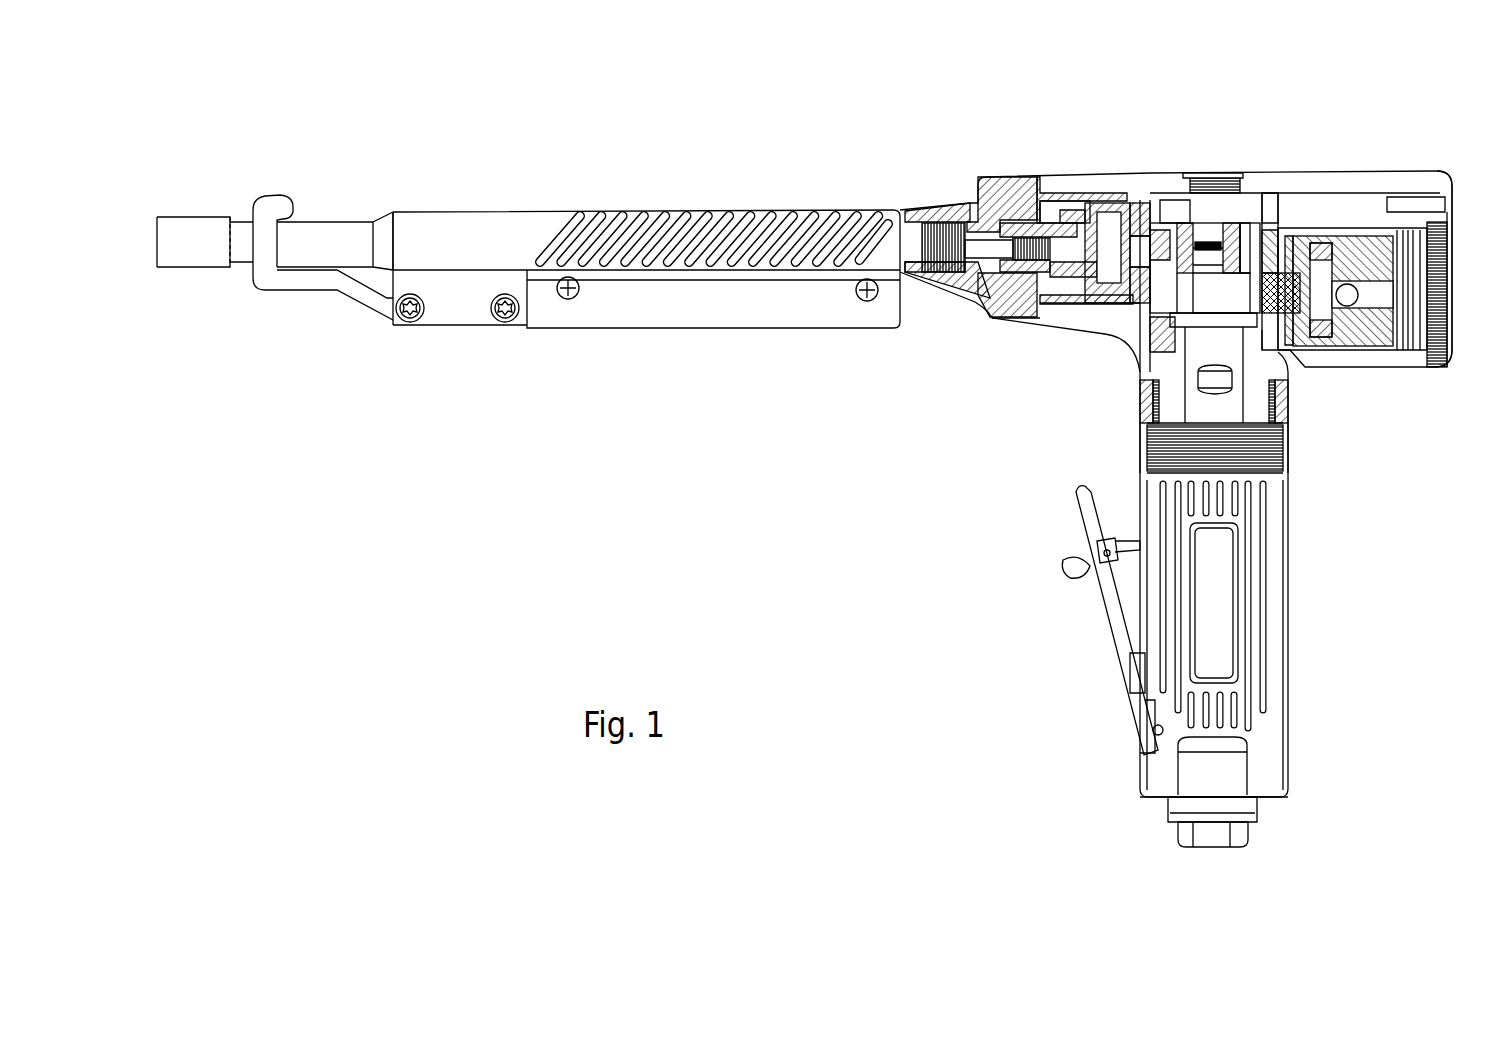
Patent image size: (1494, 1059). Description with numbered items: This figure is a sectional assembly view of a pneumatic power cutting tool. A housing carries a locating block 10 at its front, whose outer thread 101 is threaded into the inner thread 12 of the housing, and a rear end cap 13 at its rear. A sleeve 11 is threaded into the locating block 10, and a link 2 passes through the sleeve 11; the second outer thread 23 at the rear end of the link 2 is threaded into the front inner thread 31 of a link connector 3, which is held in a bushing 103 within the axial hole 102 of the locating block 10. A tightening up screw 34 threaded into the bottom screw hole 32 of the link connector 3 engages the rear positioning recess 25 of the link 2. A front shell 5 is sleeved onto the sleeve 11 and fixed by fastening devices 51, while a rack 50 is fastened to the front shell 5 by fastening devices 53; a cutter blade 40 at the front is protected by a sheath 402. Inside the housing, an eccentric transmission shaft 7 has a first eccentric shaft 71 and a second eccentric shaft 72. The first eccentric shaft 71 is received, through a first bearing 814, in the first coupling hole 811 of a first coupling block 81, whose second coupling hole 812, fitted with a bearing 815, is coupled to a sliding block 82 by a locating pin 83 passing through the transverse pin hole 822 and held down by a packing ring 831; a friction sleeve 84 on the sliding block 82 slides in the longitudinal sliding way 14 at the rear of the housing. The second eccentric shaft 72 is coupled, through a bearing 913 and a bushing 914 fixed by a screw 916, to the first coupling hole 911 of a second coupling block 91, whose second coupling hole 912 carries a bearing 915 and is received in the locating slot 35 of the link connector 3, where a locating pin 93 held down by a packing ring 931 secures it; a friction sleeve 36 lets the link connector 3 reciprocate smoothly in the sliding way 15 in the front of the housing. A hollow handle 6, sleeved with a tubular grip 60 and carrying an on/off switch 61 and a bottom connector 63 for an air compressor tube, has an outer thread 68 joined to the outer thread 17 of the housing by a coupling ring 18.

The sheath 402 is at (198, 228).
The cutter blade 40 is at (247, 222).
The front shell 5 is at (703, 198).
The rack 50 is at (316, 300).
The fastening devices 53 is at (410, 324).
The fastening devices 51 is at (568, 300).
The locating block 10 is at (918, 208).
The sleeve 11 is at (908, 222).
The outer thread 101 is at (945, 210).
The link 2 is at (982, 205).
The inner thread 12 is at (1000, 200).
The second outer thread 23 is at (1022, 210).
The rear positioning recess 25 is at (1060, 220).
The friction sleeve 36 is at (1082, 210).
The sliding way 15 is at (1097, 210).
The second coupling hole 912 is at (1130, 200).
The locating slot 35 is at (1150, 235).
The second eccentric shaft 72 is at (1175, 205).
The screw 916 is at (1203, 240).
The bushing 914 is at (1230, 250).
The first coupling hole 911 is at (1245, 280).
The bearing 913 is at (1270, 255).
The second coupling block 91 is at (1285, 270).
The transverse pin hole 822 is at (1312, 258).
The packing ring 831 is at (1328, 262).
The locating pin 83 is at (1365, 292).
The sliding block 82 is at (1382, 262).
The friction sleeve 84 is at (1402, 262).
The longitudinal sliding way 14 is at (1432, 252).
The rear end cap 13 is at (1455, 205).
The axial hole 102 is at (985, 270).
The bushing 103 is at (975, 302).
The front inner thread 31 is at (1005, 300).
The bottom screw hole 32 is at (1045, 285).
The tightening up screw 34 is at (1068, 282).
The link connector 3 is at (1060, 300).
The locating pin 93 is at (1115, 305).
The first coupling block 81 is at (1138, 305).
The packing ring 931 is at (1120, 305).
The bearing 915 is at (1085, 305).
The outer thread 17 is at (1143, 440).
The first coupling hole 811 is at (1178, 312).
The first bearing 814 is at (1225, 330).
The first eccentric shaft 71 is at (1258, 403).
The eccentric transmission shaft 7 is at (1282, 402).
The coupling ring 18 is at (1275, 440).
The outer thread 68 is at (1265, 460).
The bearing 815 is at (1292, 352).
The second coupling hole 812 is at (1356, 310).
The on/off switch 61 is at (1066, 560).
The tubular grip 60 is at (1290, 576).
The handle 6 is at (1295, 633).
The bottom connector 63 is at (1176, 832).